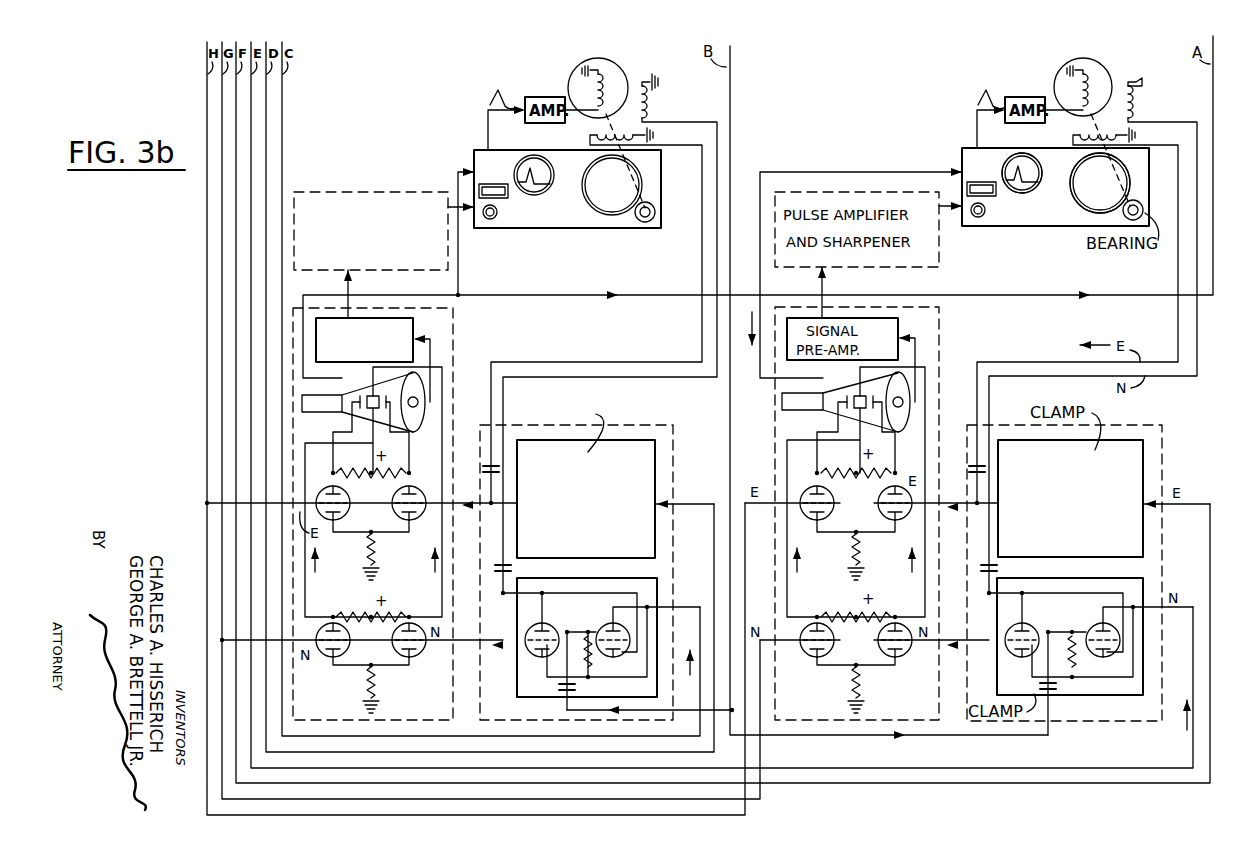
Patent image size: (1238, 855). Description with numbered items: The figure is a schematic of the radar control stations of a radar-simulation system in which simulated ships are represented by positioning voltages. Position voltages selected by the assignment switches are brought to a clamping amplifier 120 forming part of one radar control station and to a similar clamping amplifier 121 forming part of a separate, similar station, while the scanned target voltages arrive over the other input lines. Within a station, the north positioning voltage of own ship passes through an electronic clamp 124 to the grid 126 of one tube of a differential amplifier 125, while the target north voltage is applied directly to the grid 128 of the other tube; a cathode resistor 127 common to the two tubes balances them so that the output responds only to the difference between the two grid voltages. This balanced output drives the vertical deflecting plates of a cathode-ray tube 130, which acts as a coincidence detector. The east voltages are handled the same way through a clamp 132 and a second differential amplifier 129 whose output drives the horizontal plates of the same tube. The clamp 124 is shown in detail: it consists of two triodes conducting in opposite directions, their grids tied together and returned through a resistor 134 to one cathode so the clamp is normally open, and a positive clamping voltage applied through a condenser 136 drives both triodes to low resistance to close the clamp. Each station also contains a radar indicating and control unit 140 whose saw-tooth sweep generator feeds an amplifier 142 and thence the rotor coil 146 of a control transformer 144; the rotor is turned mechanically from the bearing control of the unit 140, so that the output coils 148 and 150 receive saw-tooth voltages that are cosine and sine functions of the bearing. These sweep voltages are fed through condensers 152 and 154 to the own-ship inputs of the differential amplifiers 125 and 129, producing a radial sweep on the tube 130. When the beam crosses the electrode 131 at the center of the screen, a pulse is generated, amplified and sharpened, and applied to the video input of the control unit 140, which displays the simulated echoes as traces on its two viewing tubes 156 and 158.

The clamping amplifier 120 is at (630, 425).
The clamping amplifier 121 is at (1150, 425).
The electronic clamp 124 is at (1083, 586).
The differential amplifier 125 is at (872, 656).
The grid 126 is at (899, 655).
The cathode resistor 127 is at (861, 682).
The grid 128 is at (806, 655).
The second differential amplifier 129 is at (872, 514).
The cathode-ray tube 130 is at (897, 385).
The electrode 131 is at (903, 402).
The clamp 132 is at (1128, 465).
The resistor 134 is at (1075, 660).
The condenser 136 is at (1055, 692).
The radar indicating and control unit 140 is at (1082, 229).
The amplifier 142 is at (1040, 95).
The control transformer 144 is at (1108, 76).
The rotor coil 146 is at (1082, 64).
The output coil 148 is at (1075, 135).
The output coil 150 is at (1134, 106).
The condenser 152 is at (993, 570).
The condenser 154 is at (983, 472).
The viewing tube 156 is at (1038, 188).
The viewing tube 158 is at (1080, 212).